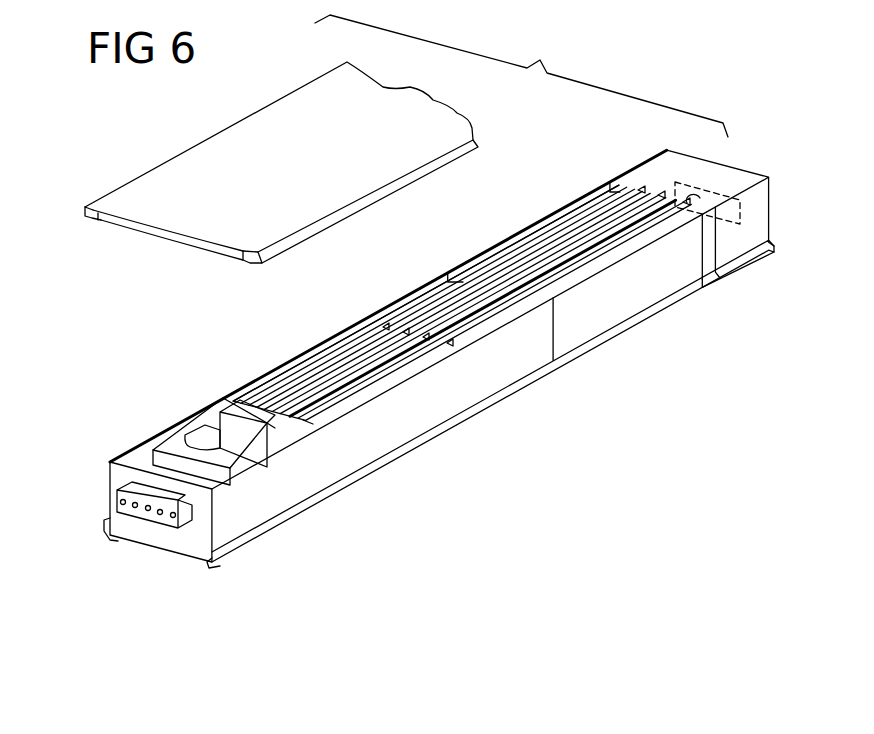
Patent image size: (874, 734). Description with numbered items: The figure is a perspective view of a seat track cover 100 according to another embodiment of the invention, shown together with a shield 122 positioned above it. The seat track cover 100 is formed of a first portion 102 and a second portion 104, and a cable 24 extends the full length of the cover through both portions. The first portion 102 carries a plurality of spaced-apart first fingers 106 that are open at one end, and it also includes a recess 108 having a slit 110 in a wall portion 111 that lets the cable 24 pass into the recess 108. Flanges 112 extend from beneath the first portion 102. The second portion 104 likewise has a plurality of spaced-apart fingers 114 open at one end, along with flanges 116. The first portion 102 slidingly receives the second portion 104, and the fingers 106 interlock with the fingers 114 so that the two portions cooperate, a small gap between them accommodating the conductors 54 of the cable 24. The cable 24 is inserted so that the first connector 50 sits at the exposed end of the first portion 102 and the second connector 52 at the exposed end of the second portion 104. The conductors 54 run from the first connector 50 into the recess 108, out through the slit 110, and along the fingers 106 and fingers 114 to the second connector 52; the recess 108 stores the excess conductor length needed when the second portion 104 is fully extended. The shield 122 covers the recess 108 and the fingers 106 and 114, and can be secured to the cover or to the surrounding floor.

The seat track cover 100 is at (452, 446).
The shield 122 is at (204, 172).
The first portion 102 is at (258, 368).
The second portion 104 is at (510, 231).
The first fingers 106 is at (343, 337).
The recess 108 is at (220, 427).
The slit 110 is at (268, 423).
The wall portion 111 is at (230, 430).
The flanges 112 is at (103, 527).
The fingers 114 is at (581, 205).
The flanges 116 is at (723, 281).
The cable 24 is at (180, 427).
The first connector 50 is at (157, 518).
The second connector 52 is at (718, 187).
The conductors 54 is at (184, 447).